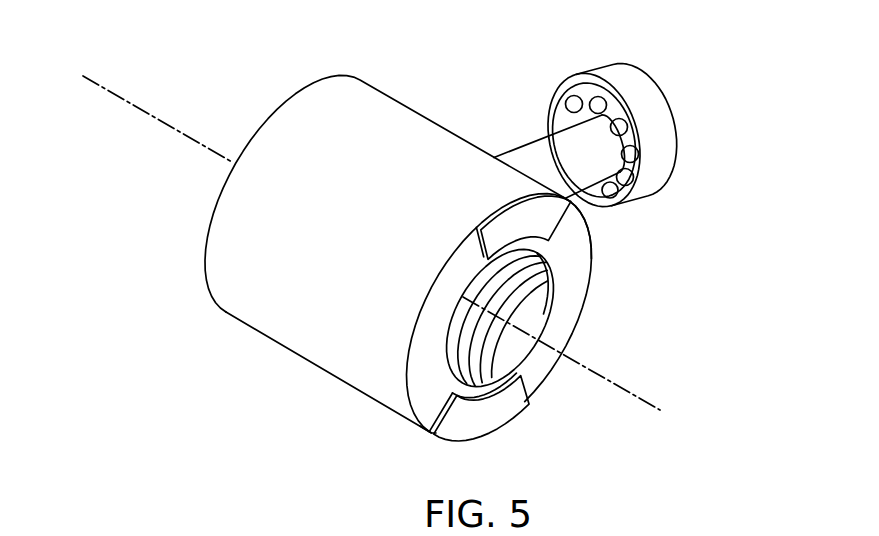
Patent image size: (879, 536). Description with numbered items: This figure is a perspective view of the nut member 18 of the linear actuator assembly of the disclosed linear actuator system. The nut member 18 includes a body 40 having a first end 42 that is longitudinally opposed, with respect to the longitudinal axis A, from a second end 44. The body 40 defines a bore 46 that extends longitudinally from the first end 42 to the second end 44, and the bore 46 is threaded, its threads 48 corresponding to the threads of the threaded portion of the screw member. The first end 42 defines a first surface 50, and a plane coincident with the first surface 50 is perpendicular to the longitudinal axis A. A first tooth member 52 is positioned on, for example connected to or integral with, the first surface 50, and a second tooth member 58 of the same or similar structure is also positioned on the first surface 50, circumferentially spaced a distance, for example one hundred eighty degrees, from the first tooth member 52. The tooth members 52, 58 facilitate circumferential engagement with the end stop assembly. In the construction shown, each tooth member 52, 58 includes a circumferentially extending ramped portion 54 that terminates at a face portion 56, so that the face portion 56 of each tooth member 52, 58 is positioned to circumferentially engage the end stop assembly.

The longitudinal axis A is at (128, 100).
The nut member 18 is at (723, 166).
The body 40 is at (306, 321).
The first end 42 is at (581, 291).
The second end 44 is at (282, 107).
The bore 46 is at (531, 311).
The threads 48 is at (465, 358).
The first surface 50 is at (437, 290).
The first tooth member 52 is at (581, 237).
The ramped portion 54 is at (524, 216).
The face portion 56 is at (472, 231).
The second tooth member 58 is at (430, 427).